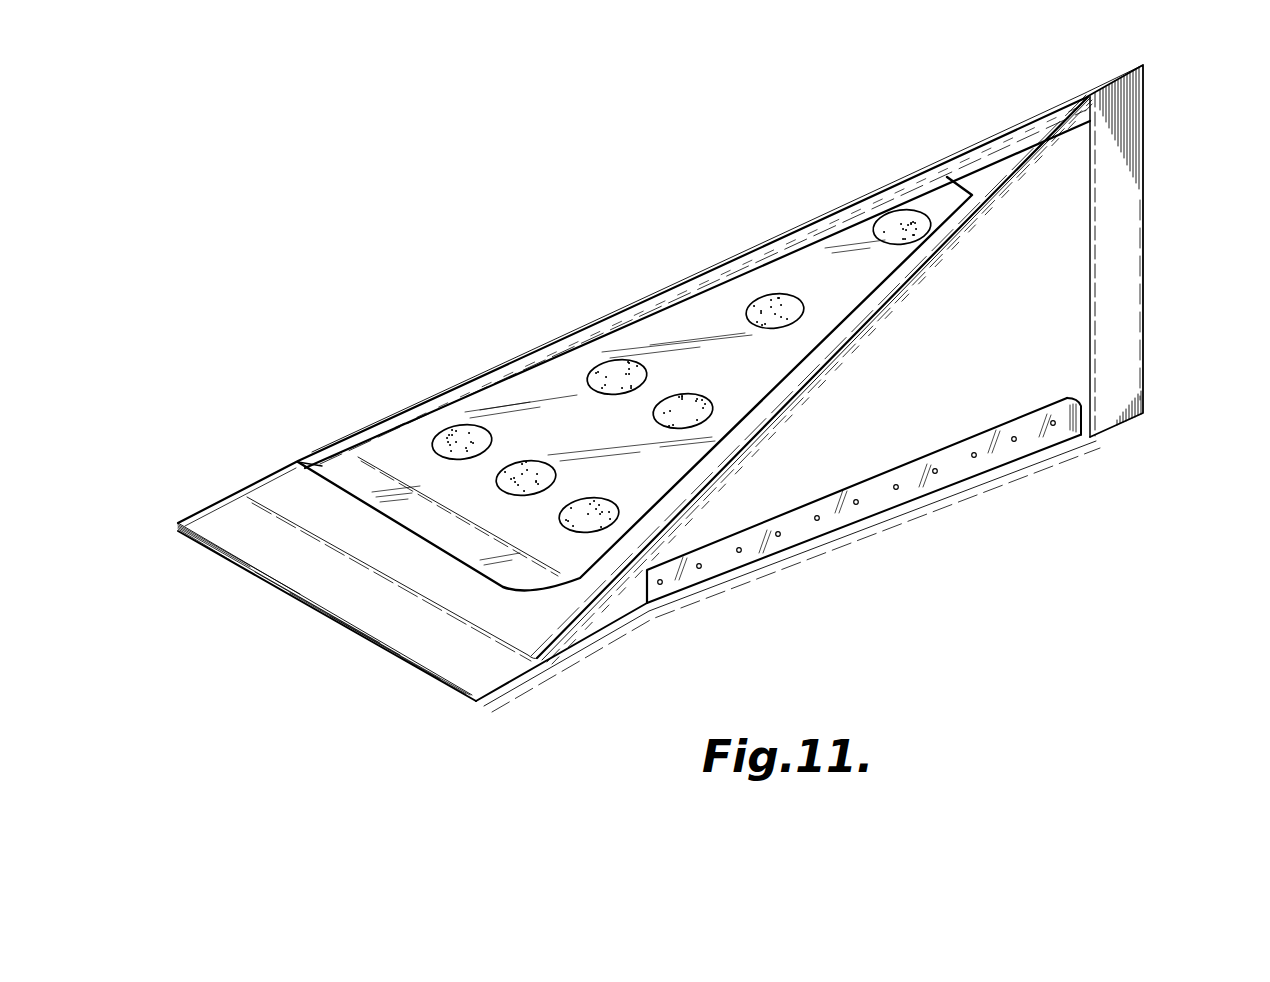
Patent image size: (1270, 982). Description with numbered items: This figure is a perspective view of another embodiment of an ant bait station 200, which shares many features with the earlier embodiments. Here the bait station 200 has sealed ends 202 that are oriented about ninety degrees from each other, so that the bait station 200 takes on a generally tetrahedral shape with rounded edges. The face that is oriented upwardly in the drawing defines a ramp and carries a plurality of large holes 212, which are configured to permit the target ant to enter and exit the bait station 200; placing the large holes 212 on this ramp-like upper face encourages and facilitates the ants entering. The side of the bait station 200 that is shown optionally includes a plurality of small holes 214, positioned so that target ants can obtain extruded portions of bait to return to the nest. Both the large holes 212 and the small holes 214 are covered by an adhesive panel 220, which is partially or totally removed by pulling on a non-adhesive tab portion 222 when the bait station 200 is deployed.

The ant bait station 200 is at (459, 262).
The sealed ends 202 is at (242, 533).
The large holes 212 is at (455, 429).
The small holes 214 is at (661, 583).
The adhesive panel 220 is at (671, 305).
The non-adhesive tab portion 222 is at (302, 464).